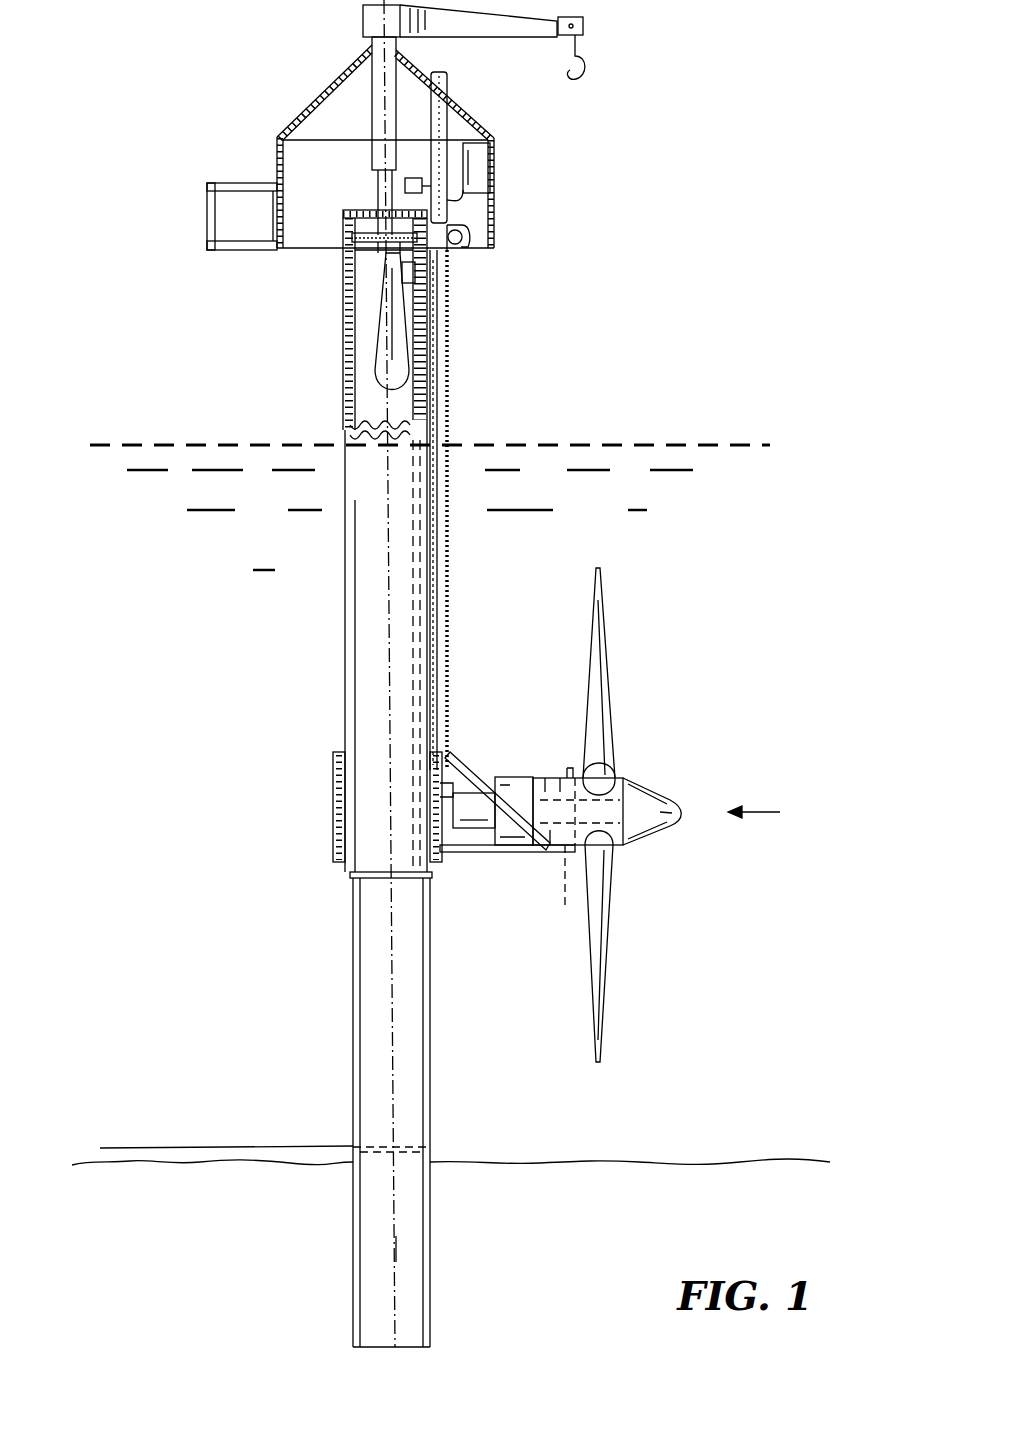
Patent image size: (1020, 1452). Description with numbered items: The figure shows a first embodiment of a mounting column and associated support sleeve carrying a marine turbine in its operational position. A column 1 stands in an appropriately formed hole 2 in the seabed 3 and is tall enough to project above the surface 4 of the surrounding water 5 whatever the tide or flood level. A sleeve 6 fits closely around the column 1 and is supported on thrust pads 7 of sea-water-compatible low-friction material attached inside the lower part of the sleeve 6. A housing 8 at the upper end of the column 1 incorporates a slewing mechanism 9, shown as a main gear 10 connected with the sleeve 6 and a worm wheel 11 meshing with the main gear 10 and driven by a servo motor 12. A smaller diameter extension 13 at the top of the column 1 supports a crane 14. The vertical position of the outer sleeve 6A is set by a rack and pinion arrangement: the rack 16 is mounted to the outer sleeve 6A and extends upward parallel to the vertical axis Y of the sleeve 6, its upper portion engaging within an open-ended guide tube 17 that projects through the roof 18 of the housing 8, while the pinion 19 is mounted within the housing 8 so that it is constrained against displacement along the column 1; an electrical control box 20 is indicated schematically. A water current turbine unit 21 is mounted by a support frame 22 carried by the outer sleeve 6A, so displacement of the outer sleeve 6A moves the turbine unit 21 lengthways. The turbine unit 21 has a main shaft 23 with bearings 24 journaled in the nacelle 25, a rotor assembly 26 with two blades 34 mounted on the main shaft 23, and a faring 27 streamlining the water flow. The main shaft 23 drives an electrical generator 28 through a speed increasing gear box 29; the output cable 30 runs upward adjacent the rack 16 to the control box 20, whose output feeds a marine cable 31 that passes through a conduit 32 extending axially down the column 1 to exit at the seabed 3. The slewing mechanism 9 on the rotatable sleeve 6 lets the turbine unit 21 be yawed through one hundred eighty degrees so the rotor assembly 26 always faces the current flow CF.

The column 1 is at (378, 1000).
The hole 2 is at (430, 1160).
The seabed 3 is at (241, 1228).
The surface 4 is at (168, 445).
The water 5 is at (116, 813).
The sleeve 6 is at (345, 590).
The outer sleeve 6A is at (340, 815).
The thrust pads 7 is at (350, 875).
The housing 8 is at (302, 105).
The slewing mechanism 9 is at (368, 286).
The main gear 10 is at (371, 264).
The worm wheel 11 is at (360, 212).
The servo motor 12 is at (345, 262).
The extension 13 is at (372, 95).
The crane 14 is at (365, 20).
The rack 16 is at (450, 378).
The guide tube 17 is at (449, 79).
The roof 18 is at (470, 112).
The pinion 19 is at (460, 249).
The electrical control box 20 is at (483, 178).
The water current turbine unit 21 is at (547, 892).
The support frame 22 is at (478, 752).
The main shaft 23 is at (657, 836).
The bearings 24 is at (565, 892).
The nacelle 25 is at (540, 778).
The rotor assembly 26 is at (652, 768).
The faring 27 is at (655, 803).
The electrical generator 28 is at (477, 828).
The speed increasing gear box 29 is at (520, 846).
The output cable 30 is at (433, 428).
The marine cable 31 is at (373, 352).
The conduit 32 is at (388, 660).
The blades 34 is at (604, 950).
The vertical axis Y is at (398, 1248).
The current flow CF is at (777, 812).